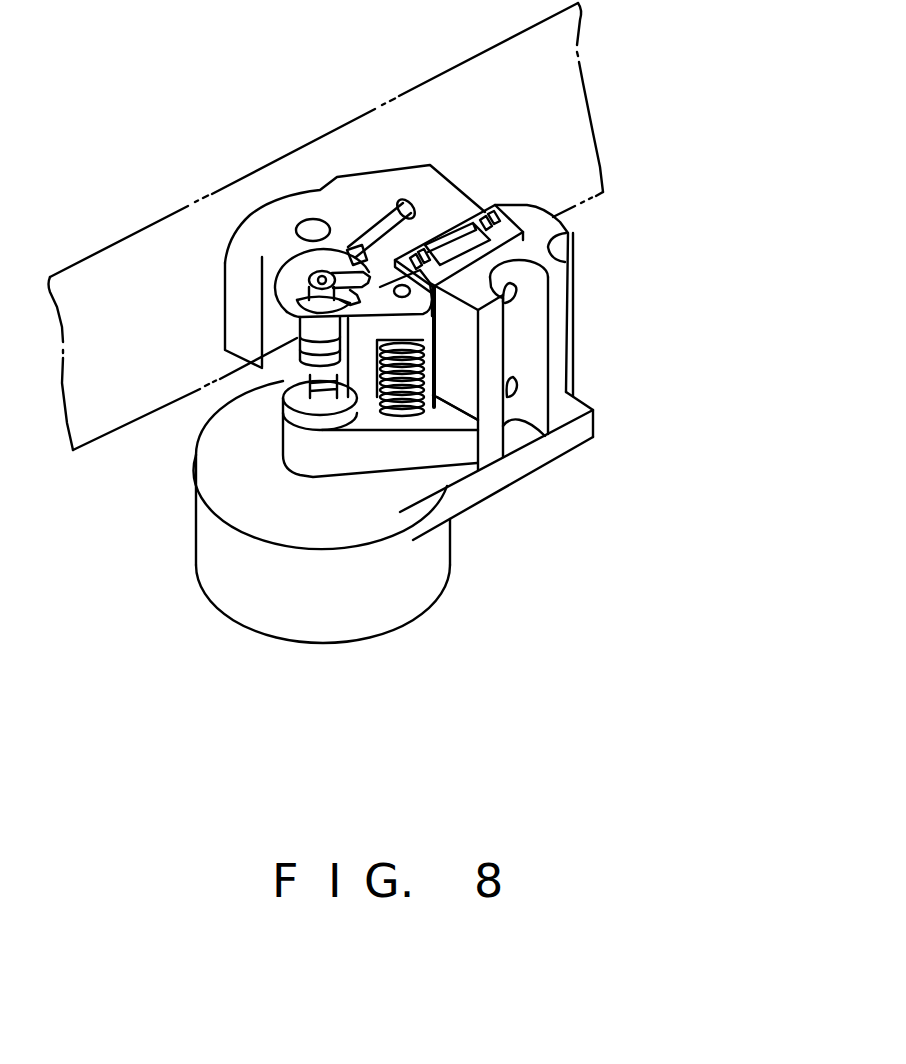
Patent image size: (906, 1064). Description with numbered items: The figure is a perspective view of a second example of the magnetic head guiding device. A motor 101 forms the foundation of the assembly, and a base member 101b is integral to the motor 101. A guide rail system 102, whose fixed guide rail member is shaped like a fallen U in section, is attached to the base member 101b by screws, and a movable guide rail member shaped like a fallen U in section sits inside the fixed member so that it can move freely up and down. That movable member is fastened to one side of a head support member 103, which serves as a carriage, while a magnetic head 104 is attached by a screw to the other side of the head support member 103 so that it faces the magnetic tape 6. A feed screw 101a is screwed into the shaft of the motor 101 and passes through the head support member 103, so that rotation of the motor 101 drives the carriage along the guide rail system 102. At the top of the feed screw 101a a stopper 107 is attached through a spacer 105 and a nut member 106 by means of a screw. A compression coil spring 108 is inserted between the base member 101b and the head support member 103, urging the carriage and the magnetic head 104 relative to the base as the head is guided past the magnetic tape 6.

The magnetic tape 6 is at (113, 253).
The motor 101 is at (385, 633).
The feed screw 101a is at (300, 405).
The base member 101b is at (560, 458).
The guide rail system 102 is at (455, 248).
The head support member 103 is at (403, 173).
The magnetic head 104 is at (225, 310).
The spacer 105 is at (253, 366).
The nut member 106 is at (373, 257).
The stopper 107 is at (301, 262).
The compression coil spring 108 is at (402, 412).